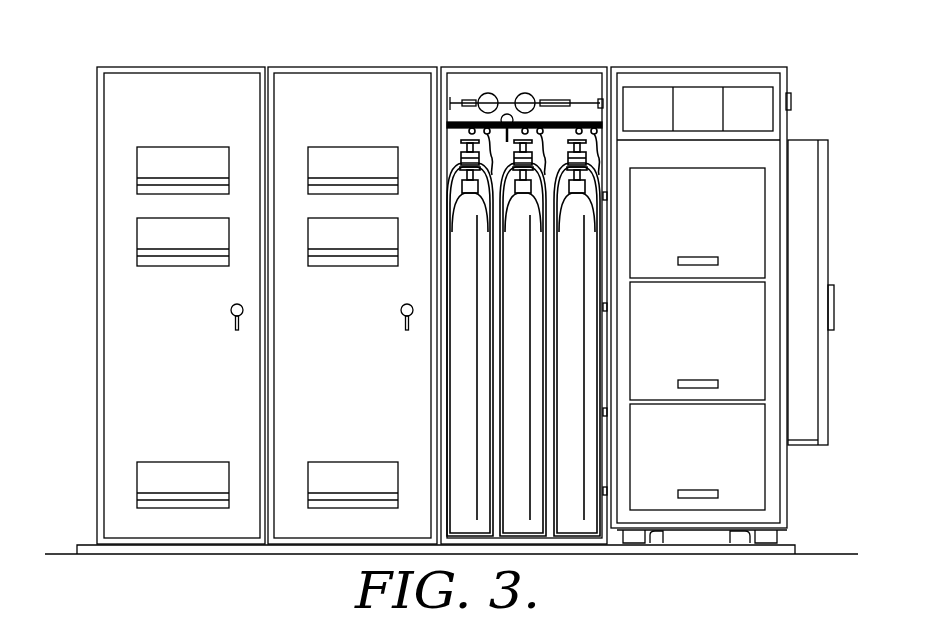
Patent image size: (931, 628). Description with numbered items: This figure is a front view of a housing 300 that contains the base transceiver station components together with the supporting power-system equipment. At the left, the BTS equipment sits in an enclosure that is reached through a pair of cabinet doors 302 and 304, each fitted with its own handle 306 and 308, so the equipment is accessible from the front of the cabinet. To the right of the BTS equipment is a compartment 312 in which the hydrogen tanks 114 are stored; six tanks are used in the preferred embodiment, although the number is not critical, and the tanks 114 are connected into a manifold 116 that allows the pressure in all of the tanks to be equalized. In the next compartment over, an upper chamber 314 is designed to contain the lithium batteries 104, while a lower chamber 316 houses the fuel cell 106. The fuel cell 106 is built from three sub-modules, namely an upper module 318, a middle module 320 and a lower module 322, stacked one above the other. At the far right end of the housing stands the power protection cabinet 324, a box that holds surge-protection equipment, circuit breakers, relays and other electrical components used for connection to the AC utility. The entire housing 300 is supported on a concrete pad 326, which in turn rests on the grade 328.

The housing 300 is at (714, 55).
The cabinet door 302 is at (104, 106).
The cabinet door 304 is at (298, 78).
The handle 306 is at (232, 325).
The handle 308 is at (402, 325).
The compartment 312 is at (530, 84).
The upper chamber 314 is at (646, 80).
The lower chamber 316 is at (772, 155).
The upper module 318 is at (718, 233).
The middle module 320 is at (718, 355).
The lower module 322 is at (718, 465).
The power protection cabinet 324 is at (805, 425).
The concrete pad 326 is at (92, 545).
The grade 328 is at (146, 598).
The lithium batteries 104 is at (717, 99).
The fuel cell 106 is at (770, 339).
The hydrogen tanks 114 is at (537, 515).
The manifold 116 is at (462, 122).